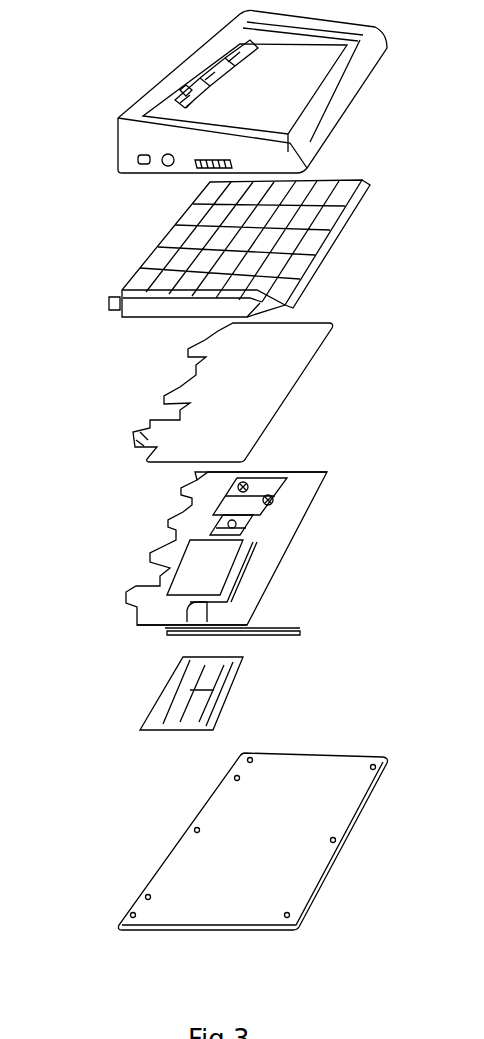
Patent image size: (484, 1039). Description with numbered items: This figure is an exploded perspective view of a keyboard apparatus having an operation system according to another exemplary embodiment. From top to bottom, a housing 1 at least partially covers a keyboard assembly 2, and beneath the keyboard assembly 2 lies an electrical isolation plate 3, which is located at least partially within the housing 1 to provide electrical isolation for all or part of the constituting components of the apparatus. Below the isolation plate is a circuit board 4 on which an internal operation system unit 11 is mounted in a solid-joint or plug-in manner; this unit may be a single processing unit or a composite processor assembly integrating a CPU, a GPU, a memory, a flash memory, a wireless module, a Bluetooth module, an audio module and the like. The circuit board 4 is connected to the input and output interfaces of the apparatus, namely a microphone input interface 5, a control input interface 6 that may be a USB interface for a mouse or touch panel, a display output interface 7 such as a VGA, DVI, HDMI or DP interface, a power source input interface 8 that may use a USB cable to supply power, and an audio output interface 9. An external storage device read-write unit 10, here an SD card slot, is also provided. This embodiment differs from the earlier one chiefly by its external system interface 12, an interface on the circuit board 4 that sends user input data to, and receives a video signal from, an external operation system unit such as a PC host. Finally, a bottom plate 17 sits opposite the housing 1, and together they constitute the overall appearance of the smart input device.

The housing 1 is at (210, 50).
The keyboard assembly 2 is at (185, 218).
The electrical isolation plate 3 is at (195, 372).
The circuit board 4 is at (195, 472).
The microphone input interface 5 is at (291, 543).
The control input interface 6 is at (173, 527).
The display output interface 7 is at (178, 550).
The power source input interface 8 is at (305, 627).
The audio output interface 9 is at (167, 633).
The external storage device read-write unit 10 is at (290, 627).
The internal operation system unit 11 is at (197, 687).
The external system interface 12 is at (187, 497).
The bottom plate 17 is at (230, 790).